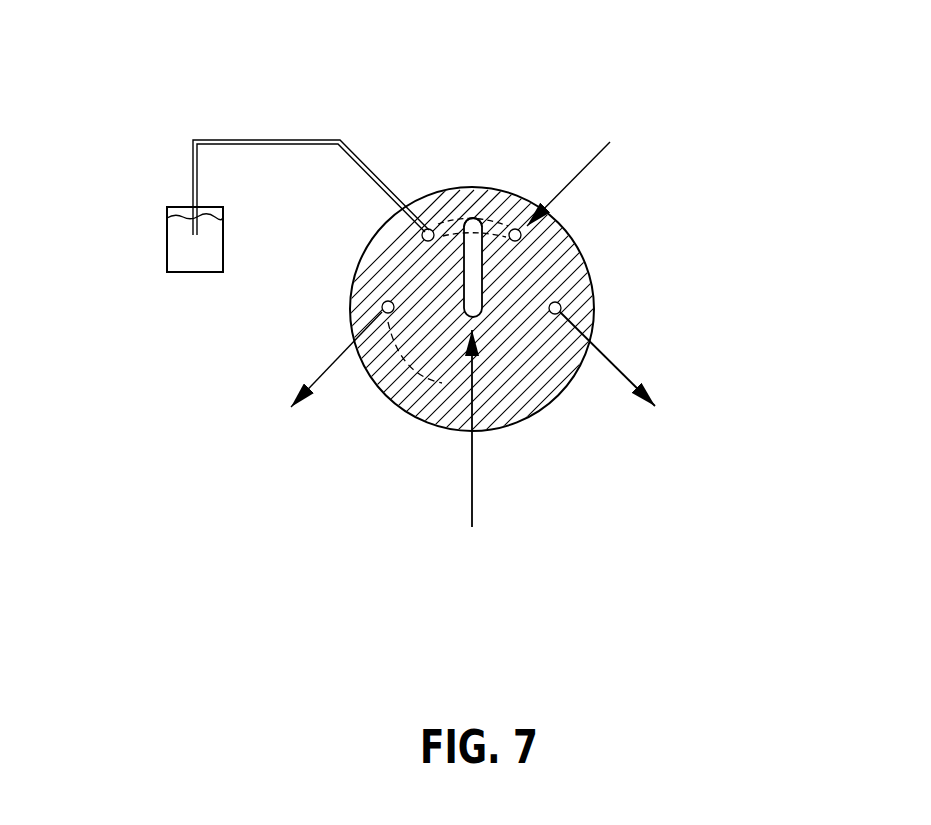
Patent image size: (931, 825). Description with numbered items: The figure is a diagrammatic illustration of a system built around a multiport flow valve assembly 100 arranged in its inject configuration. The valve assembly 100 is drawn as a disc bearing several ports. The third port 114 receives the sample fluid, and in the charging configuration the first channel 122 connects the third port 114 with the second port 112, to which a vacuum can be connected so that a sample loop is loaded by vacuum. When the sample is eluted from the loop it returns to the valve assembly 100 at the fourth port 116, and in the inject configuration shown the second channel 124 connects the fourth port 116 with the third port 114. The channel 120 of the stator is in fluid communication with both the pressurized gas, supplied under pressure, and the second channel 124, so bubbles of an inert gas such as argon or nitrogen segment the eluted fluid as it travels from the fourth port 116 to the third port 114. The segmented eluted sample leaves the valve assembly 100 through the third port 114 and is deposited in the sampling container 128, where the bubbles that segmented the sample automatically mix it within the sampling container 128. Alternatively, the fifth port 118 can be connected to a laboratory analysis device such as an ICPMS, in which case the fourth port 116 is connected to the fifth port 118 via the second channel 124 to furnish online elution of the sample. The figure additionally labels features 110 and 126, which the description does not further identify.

The valve assembly 100 is at (318, 55).
The valve body 110 is at (478, 322).
The second port 112 is at (383, 304).
The third port 114 is at (426, 228).
The fourth port 116 is at (522, 228).
The fifth port 118 is at (562, 311).
The channel 120 is at (475, 277).
The first channel 122 is at (406, 335).
The second channel 124 is at (460, 220).
The sample tube 126 is at (265, 138).
The sampling container 128 is at (167, 240).